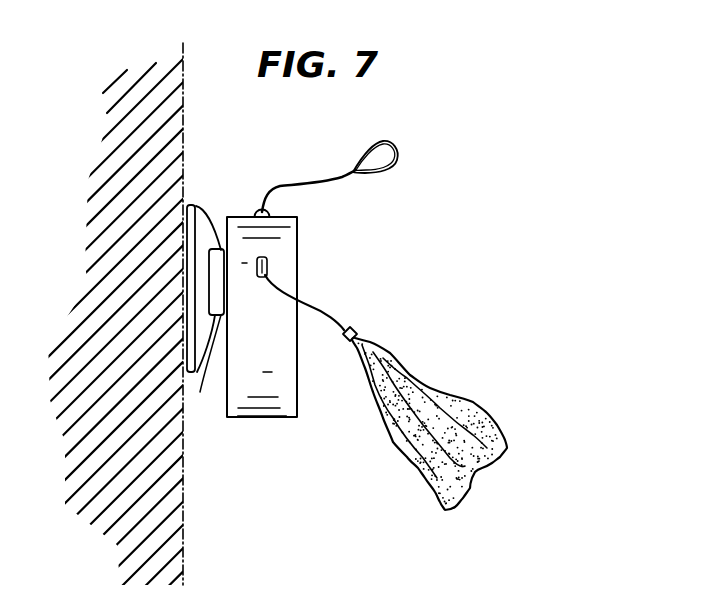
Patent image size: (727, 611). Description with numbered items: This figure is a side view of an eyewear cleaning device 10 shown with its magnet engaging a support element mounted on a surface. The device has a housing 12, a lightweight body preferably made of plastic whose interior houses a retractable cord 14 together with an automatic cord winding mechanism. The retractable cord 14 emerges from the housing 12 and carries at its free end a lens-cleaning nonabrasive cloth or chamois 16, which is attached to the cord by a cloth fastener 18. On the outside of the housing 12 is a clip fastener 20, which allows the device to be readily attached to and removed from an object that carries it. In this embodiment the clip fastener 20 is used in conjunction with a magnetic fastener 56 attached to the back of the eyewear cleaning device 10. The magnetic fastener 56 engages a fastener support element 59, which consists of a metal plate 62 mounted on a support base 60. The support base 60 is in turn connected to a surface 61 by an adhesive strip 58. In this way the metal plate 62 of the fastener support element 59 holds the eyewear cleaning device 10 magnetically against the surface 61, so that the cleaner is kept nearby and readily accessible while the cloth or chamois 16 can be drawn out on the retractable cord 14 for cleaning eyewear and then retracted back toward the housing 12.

The eyewear cleaning device 10 is at (356, 251).
The housing 12 is at (271, 410).
The retractable cord 14 is at (344, 322).
The lens-cleaning nonabrasive cloth or chamois 16 is at (462, 398).
The cloth fastener 18 is at (345, 341).
The fastener 20 is at (396, 143).
The magnetic fastener 56 is at (208, 372).
The adhesive strip 58 is at (187, 222).
The fastener support element 59 is at (160, 360).
The support base 60 is at (200, 207).
The surface 61 is at (184, 495).
The metal plate 62 is at (210, 301).